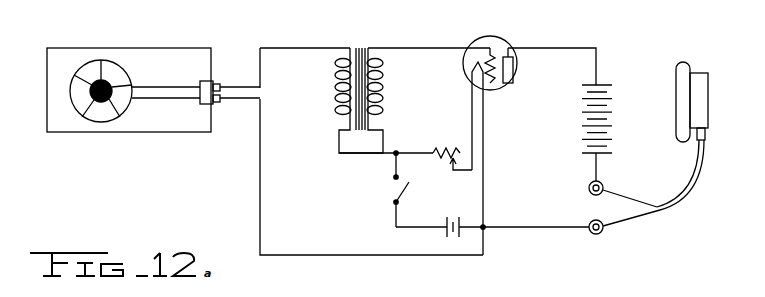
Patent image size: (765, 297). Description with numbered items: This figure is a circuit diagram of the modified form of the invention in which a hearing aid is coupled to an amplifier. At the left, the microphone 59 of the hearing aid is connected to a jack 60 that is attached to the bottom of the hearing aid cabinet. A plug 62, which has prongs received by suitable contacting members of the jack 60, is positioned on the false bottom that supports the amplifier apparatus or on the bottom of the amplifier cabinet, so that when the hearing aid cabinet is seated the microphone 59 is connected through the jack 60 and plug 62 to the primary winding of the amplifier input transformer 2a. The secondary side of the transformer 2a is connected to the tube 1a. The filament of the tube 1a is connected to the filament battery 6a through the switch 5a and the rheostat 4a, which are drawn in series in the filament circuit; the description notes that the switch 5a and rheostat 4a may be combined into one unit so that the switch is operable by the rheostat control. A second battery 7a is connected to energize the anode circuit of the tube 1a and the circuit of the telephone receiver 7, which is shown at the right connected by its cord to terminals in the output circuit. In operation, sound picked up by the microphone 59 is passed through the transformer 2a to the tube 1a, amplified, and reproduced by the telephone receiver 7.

The microphone 59 is at (96, 119).
The jack 60 is at (205, 105).
The plug 62 is at (225, 80).
The amplifier input transformer 2a is at (363, 46).
The tube 1a is at (511, 48).
The rheostat 4a is at (442, 148).
The switch 5a is at (396, 197).
The filament battery 6a is at (450, 218).
The battery 7a is at (579, 140).
The telephone receiver 7 is at (672, 116).